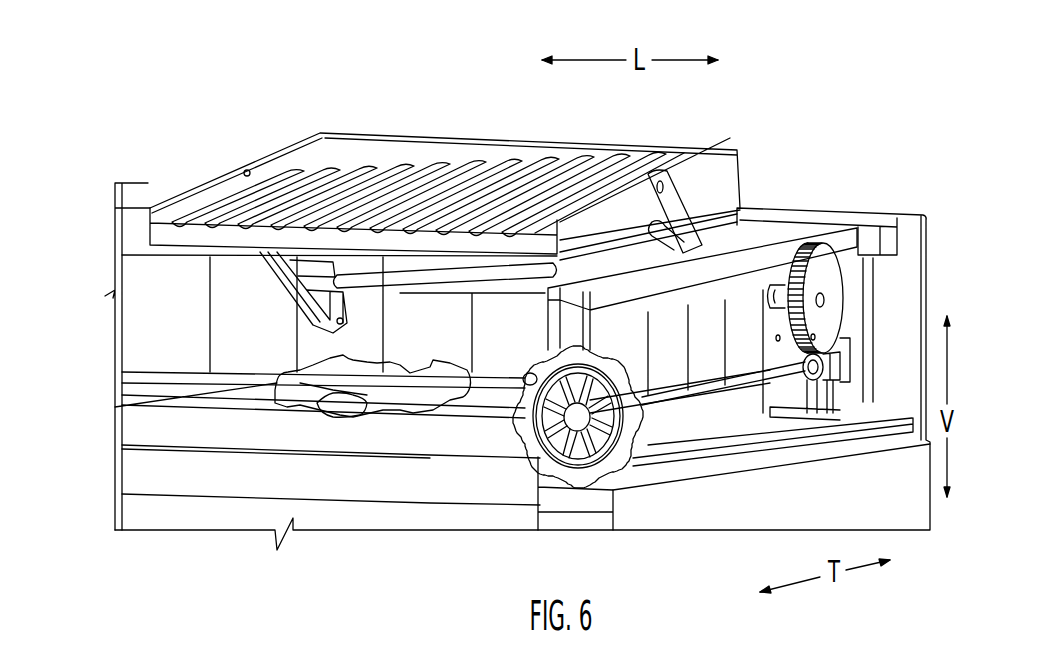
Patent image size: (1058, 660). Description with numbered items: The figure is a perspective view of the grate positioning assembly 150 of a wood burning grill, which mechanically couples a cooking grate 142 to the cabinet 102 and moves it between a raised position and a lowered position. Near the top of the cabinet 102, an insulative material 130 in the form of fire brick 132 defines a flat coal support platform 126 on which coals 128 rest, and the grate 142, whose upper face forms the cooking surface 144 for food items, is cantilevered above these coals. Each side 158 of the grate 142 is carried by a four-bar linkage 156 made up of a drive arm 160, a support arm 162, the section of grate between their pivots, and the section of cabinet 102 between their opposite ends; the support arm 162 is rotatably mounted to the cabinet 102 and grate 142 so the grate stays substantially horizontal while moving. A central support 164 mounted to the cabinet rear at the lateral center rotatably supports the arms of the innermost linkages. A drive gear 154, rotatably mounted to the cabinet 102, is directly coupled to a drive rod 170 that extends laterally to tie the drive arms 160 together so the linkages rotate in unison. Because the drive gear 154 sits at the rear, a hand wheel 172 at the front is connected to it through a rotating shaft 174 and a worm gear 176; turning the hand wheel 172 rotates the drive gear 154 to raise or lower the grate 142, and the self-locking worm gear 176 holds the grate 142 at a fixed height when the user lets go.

The cabinet 102 is at (920, 510).
The coal support platform 126 is at (143, 382).
The coals 128 is at (367, 387).
The insulative material 130 is at (183, 398).
The fire brick 132 is at (220, 397).
The cooking grate 142 is at (312, 136).
The cooking surface 144 is at (276, 187).
The grate positioning assembly 150 is at (702, 450).
The drive gear 154 is at (823, 272).
The four-bar linkage 156 is at (352, 322).
The side 158 is at (702, 182).
The drive arm 160 is at (703, 210).
The support arm 162 is at (743, 214).
The central support 164 is at (320, 300).
The drive rod 170 is at (443, 287).
The hand wheel 172 is at (540, 457).
The rotating shaft 174 is at (760, 377).
The worm gear 176 is at (850, 362).